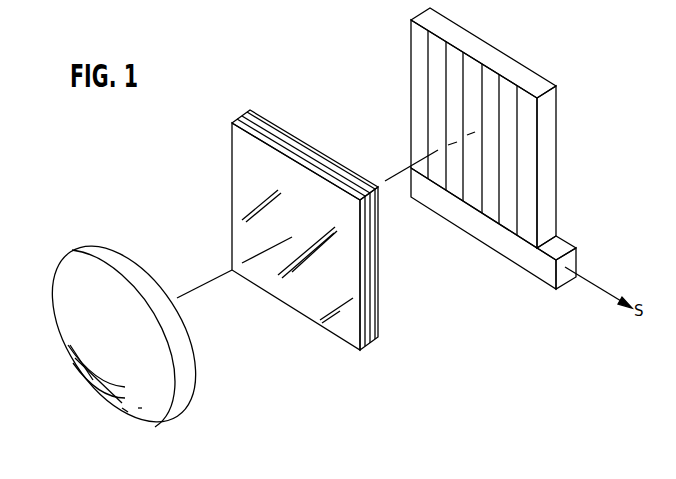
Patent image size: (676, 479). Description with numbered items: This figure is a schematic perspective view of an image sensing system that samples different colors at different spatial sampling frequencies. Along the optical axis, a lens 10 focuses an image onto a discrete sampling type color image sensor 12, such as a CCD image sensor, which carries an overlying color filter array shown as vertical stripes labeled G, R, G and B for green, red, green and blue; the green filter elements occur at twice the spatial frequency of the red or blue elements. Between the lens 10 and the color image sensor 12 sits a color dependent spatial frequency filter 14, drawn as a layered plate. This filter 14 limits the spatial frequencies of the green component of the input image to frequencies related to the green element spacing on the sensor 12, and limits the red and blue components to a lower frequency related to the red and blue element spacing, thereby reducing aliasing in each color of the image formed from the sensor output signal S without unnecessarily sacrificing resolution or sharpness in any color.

The lens 10 is at (92, 258).
The color image sensor 12 is at (492, 57).
The color dependent spatial frequency filter 14 is at (284, 141).